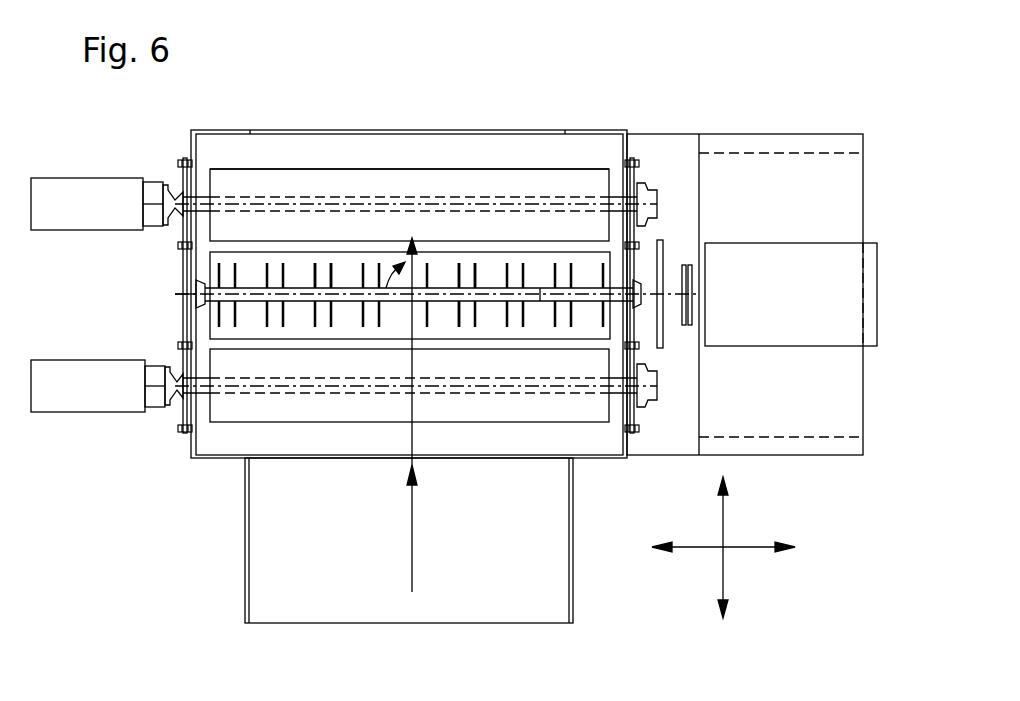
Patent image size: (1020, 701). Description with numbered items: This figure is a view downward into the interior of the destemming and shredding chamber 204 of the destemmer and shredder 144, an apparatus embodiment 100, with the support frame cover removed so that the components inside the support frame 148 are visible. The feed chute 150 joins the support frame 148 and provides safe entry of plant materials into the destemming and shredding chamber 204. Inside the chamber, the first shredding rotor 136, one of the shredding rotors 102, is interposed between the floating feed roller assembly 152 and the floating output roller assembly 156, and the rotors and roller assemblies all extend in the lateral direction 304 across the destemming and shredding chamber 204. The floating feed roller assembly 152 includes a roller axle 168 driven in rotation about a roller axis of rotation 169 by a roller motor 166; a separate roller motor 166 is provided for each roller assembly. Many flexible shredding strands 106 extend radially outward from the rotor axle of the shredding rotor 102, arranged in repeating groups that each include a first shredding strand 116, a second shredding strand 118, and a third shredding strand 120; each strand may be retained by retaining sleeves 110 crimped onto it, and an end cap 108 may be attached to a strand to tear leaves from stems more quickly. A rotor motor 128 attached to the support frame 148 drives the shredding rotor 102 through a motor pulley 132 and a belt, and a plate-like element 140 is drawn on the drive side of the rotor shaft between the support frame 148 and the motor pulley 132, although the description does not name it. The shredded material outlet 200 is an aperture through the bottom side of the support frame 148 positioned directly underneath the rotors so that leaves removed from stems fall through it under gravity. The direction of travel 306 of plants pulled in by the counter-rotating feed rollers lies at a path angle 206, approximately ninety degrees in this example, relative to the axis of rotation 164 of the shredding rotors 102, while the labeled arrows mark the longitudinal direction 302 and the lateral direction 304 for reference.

The apparatus embodiment 100 is at (664, 96).
The shredding rotor 102 is at (206, 268).
The shredding strand 106 is at (459, 320).
The end cap 108 is at (540, 286).
The retaining sleeve 110 is at (458, 287).
The first shredding strand 116 is at (300, 288).
The second shredding strand 118 is at (314, 282).
The third shredding strand 120 is at (333, 282).
The rotor motor 128 is at (822, 243).
The motor pulley 132 is at (693, 268).
The first shredding rotor 136 is at (487, 272).
The mounting plate 140 is at (661, 240).
The destemmer and shredder 144 is at (375, 110).
The support frame 148 is at (595, 459).
The feed chute 150 is at (297, 622).
The floating feed roller assembly 152 is at (340, 423).
The floating output roller assembly 156 is at (332, 168).
The axis of rotation 164 is at (183, 297).
The roller motor 166 is at (100, 216).
The roller axle 168 is at (316, 197).
The roller axis of rotation 169 is at (422, 197).
The shredded material outlet 200 is at (310, 340).
The destemming and shredding chamber 204 is at (546, 164).
The path angle 206 is at (385, 286).
The longitudinal direction 302 is at (723, 510).
The lateral direction 304 is at (738, 556).
The direction of travel 306 is at (412, 522).